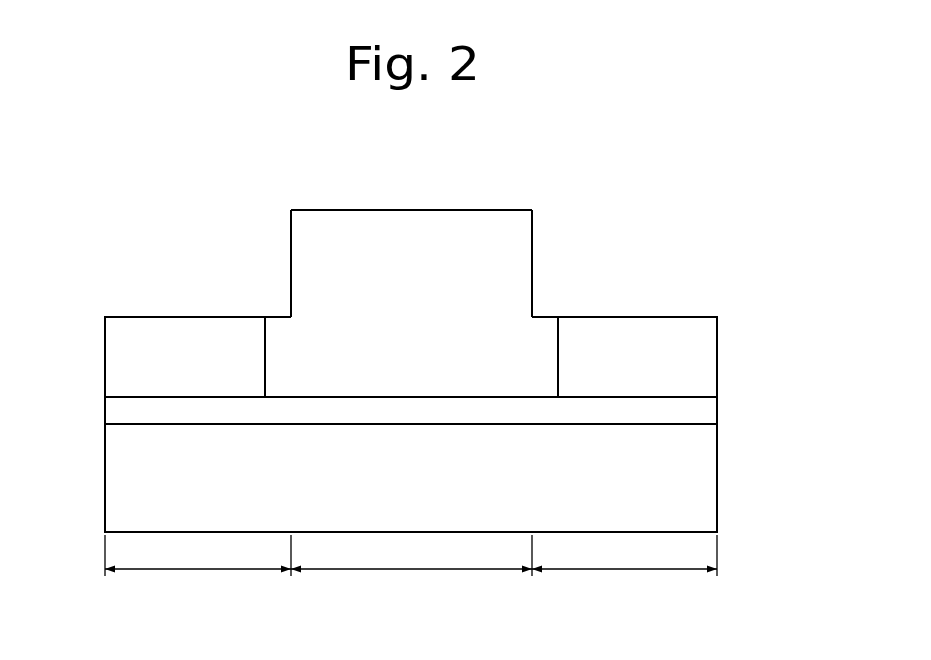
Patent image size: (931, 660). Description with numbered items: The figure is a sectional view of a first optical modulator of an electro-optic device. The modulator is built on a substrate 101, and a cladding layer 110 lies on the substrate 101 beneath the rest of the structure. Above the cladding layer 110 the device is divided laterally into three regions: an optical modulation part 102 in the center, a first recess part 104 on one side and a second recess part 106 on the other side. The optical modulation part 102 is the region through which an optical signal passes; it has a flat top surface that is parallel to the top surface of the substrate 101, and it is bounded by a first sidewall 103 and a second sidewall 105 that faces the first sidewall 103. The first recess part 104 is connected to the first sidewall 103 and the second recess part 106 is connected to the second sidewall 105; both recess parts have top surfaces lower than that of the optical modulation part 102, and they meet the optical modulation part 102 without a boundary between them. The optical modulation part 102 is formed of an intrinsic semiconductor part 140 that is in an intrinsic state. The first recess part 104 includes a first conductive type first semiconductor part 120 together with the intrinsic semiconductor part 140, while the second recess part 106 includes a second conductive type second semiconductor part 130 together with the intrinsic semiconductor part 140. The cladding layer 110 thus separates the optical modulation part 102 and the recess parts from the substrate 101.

The substrate 101 is at (707, 478).
The cladding layer 110 is at (707, 410).
The second semiconductor part 130 is at (707, 352).
The first semiconductor part 120 is at (152, 330).
The intrinsic semiconductor part 140 is at (433, 222).
The first sidewall 103 is at (291, 262).
The second sidewall 105 is at (532, 268).
The first recess part 104 is at (198, 565).
The optical modulation part 102 is at (411, 565).
The second recess part 106 is at (624, 565).